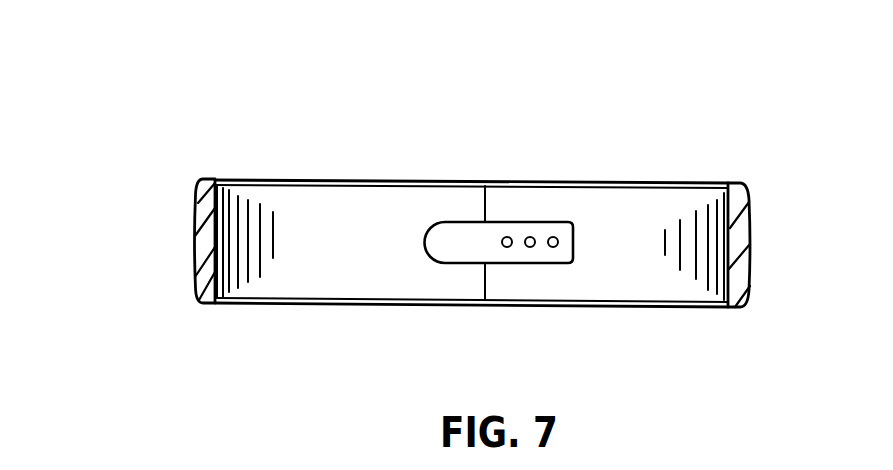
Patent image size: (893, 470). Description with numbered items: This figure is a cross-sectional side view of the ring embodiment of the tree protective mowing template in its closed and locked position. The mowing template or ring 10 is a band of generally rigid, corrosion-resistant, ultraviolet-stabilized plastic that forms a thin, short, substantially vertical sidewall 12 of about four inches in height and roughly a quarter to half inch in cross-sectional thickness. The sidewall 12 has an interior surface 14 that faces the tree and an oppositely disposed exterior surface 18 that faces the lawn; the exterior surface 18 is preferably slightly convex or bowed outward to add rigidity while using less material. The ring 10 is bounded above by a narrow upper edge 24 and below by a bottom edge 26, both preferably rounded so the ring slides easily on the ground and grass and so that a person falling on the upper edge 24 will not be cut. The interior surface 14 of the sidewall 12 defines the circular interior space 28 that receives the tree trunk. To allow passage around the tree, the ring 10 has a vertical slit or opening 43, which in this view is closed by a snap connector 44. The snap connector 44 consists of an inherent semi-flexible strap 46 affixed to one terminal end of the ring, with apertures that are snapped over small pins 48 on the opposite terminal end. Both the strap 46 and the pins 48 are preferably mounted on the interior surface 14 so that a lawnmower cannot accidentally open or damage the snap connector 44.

The mowing template or ring 10 is at (425, 225).
The sidewall 12 is at (300, 198).
The interior surface 14 is at (221, 258).
The exterior surface 18 is at (195, 245).
The upper edge 24 is at (722, 190).
The bottom edge 26 is at (650, 307).
The circular interior space 28 is at (358, 210).
The vertical slit or opening 43 is at (484, 212).
The snap connector 44 is at (513, 222).
The semi-flexible strap 46 is at (453, 247).
The pins 48 is at (507, 250).